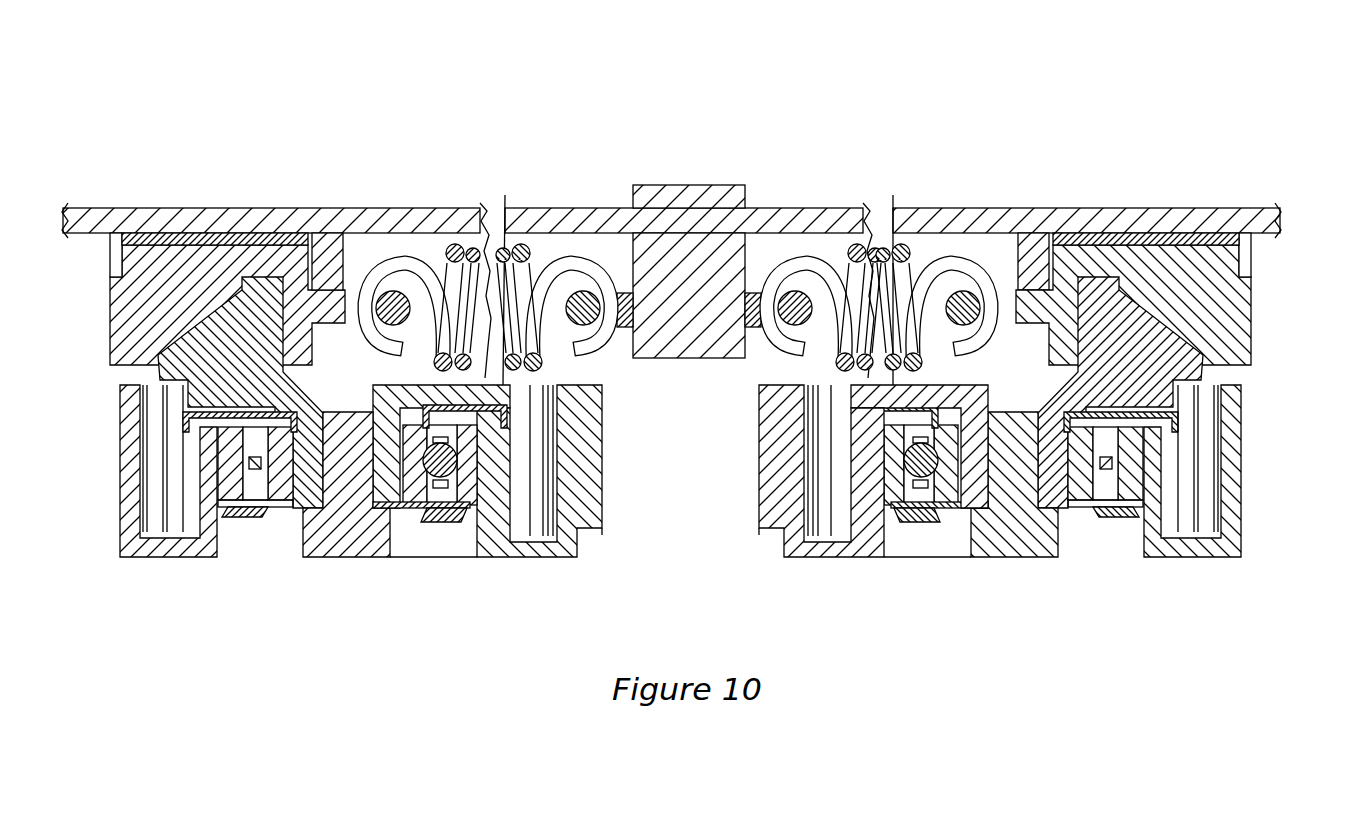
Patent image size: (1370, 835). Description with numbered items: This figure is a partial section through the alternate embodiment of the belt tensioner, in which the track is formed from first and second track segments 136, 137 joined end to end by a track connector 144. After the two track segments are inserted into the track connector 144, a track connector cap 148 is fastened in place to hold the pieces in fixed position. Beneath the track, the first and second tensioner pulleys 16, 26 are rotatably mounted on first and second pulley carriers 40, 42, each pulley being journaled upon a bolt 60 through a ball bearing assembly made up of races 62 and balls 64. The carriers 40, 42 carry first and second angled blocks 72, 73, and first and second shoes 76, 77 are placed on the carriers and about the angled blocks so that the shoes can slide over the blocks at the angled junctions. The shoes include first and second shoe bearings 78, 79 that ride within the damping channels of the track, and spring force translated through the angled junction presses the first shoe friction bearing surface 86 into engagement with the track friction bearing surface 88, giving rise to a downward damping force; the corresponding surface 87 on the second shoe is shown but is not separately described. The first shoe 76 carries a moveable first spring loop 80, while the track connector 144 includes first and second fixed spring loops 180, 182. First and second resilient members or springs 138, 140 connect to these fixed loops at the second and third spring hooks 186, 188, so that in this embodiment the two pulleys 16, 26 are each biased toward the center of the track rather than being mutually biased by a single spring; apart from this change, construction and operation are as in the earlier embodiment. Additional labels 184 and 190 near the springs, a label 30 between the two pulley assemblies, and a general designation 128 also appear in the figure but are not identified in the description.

The first tensioner pulley 16 is at (125, 558).
The second tensioner pulley 26 is at (1235, 558).
The gap between housings 30 is at (752, 538).
The first pulley carrier 40 is at (297, 510).
The second pulley carrier 42 is at (1078, 552).
The bolt 60 is at (345, 558).
The race 62 is at (245, 517).
The ball 64 is at (465, 525).
The first angled block 72 is at (160, 375).
The second angled block 73 is at (1200, 375).
The first shoe 76 is at (110, 335).
The second shoe 77 is at (1252, 340).
The first shoe bearing 78 is at (110, 255).
The second shoe bearing 79 is at (1252, 255).
The first spring loop 80 is at (345, 285).
The first shoe friction bearing surface 86 is at (150, 218).
The second mounting plate 87 is at (1103, 213).
The track friction bearing surface 88 is at (190, 240).
The hinge assembly 128 is at (1282, 104).
The first track segment 136 is at (276, 254).
The second track segment 137 is at (1087, 219).
The first resilient member or spring 138 is at (530, 250).
The second resilient member or spring 140 is at (930, 250).
The track connector 144 is at (772, 232).
The track connector cap 148 is at (708, 185).
The first fixed spring loop 180 is at (617, 250).
The second fixed spring loop 182 is at (790, 255).
The first spring 184 is at (415, 268).
The second spring hook 186 is at (585, 262).
The third spring hook 188 is at (820, 262).
The fourth spring 190 is at (950, 262).